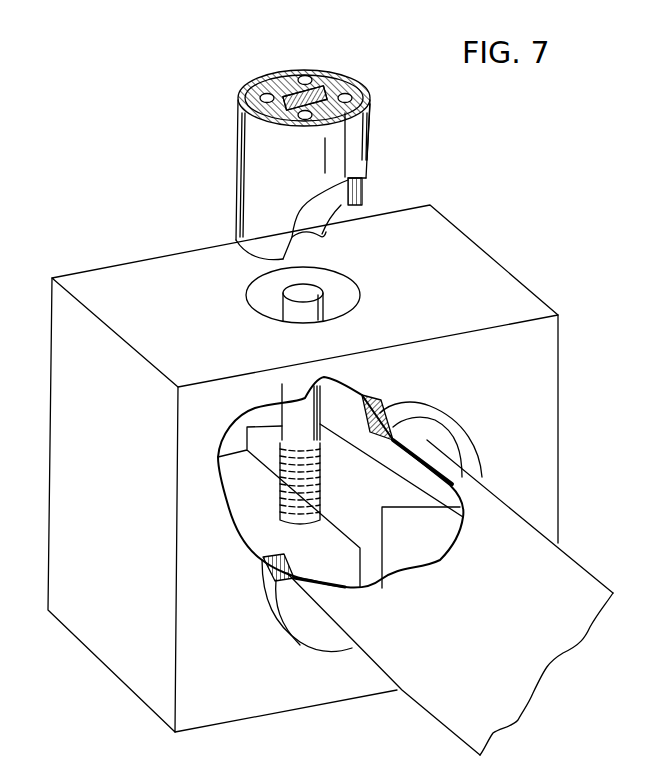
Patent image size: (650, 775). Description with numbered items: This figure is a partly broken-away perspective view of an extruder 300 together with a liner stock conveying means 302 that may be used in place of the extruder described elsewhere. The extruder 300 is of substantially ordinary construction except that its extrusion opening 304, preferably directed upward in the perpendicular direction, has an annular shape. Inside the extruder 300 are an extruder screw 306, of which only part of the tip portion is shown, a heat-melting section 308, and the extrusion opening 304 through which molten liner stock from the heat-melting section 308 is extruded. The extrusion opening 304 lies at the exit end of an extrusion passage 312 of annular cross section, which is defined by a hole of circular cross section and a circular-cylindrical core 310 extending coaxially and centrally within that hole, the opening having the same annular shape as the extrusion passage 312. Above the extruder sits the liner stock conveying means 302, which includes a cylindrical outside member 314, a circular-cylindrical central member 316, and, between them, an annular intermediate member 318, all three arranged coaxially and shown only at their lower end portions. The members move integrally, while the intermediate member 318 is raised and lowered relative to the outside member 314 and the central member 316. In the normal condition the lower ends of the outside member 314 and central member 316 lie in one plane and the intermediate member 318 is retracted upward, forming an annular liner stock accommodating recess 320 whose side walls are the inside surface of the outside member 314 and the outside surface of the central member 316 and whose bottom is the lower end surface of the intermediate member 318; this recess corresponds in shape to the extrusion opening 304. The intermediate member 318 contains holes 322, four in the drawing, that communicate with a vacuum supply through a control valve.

The extruder 300 is at (93, 246).
The liner stock conveying means 302 is at (234, 165).
The extrusion opening 304 is at (350, 292).
The extruder screw 306 is at (413, 520).
The heat-melting section 308 is at (585, 553).
The circular-cylindrical core 310 is at (293, 403).
The extrusion passage 312 is at (343, 397).
The cylindrical outside member 314 is at (365, 128).
The circular-cylindrical central member 316 is at (315, 238).
The annular intermediate member 318 is at (327, 212).
The liner stock accommodating recess 320 is at (243, 240).
The holes 322 is at (302, 79).